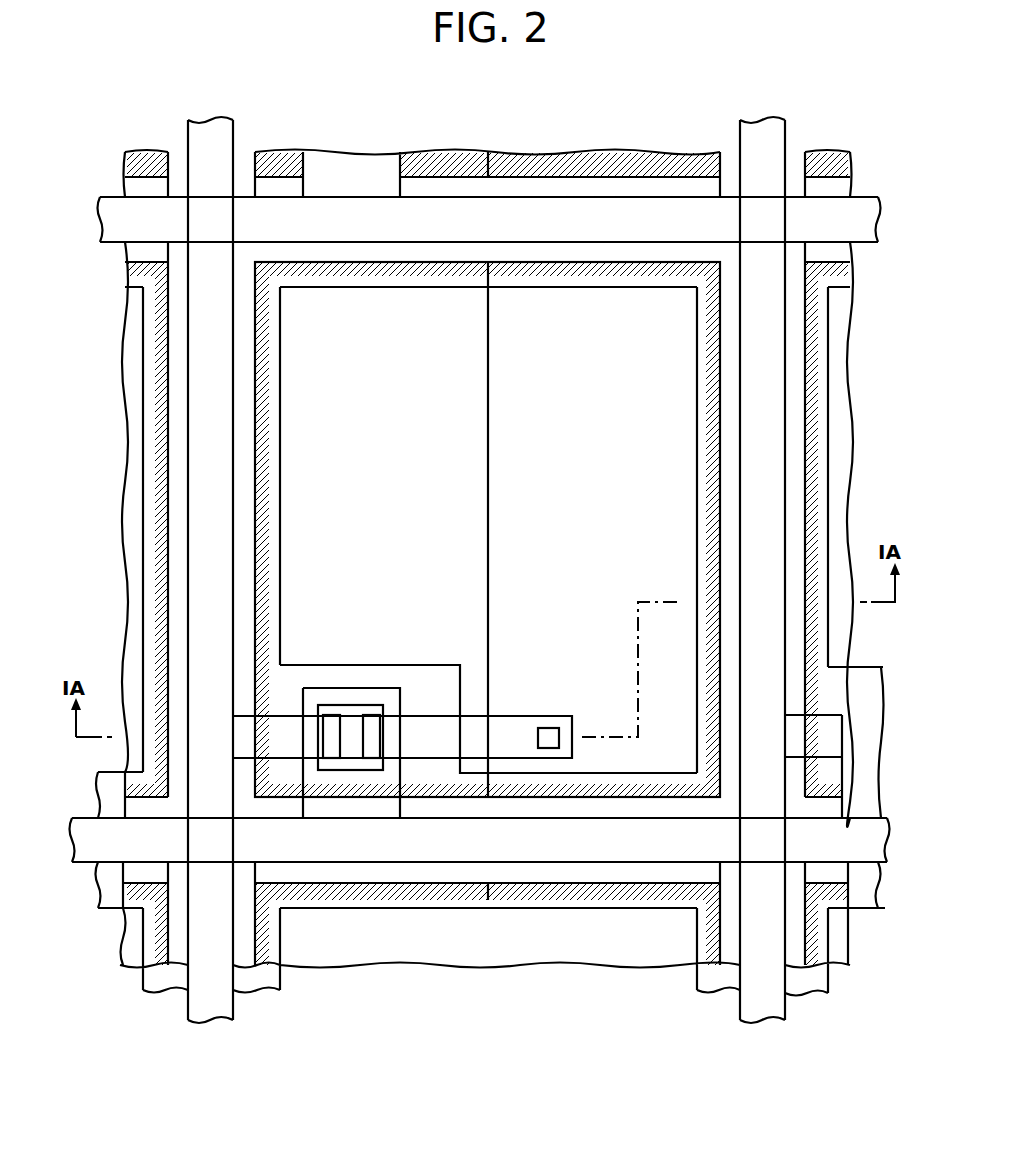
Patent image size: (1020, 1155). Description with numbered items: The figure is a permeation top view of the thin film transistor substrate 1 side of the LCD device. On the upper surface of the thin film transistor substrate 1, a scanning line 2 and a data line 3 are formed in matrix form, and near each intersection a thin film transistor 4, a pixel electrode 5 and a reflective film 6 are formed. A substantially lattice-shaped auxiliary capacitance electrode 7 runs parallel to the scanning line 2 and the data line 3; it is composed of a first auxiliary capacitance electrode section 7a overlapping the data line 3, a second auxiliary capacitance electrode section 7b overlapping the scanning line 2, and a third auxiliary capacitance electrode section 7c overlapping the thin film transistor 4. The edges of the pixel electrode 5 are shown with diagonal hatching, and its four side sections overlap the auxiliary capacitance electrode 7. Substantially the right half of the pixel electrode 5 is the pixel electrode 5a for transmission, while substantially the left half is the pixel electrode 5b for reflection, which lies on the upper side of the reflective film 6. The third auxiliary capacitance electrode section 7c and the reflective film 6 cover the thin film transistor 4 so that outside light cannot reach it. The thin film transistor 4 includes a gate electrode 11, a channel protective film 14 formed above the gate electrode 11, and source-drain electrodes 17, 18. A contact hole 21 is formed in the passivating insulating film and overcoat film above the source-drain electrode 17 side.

The thin film transistor substrate 1 is at (692, 152).
The scanning line 2 is at (862, 243).
The data line 3 is at (214, 134).
The thin film transistor 4 is at (334, 832).
The pixel electrode 5 is at (487, 433).
The pixel electrode for transmission 5a is at (536, 262).
The pixel electrode for reflection 5b is at (358, 262).
The reflective film 6 is at (470, 388).
The auxiliary capacitance electrode 7 is at (265, 984).
The first auxiliary capacitance electrode section 7a is at (270, 439).
The second auxiliary capacitance electrode section 7b is at (411, 277).
The third auxiliary capacitance electrode section 7c is at (437, 682).
The gate electrode 11 is at (386, 697).
The channel protective film 14 is at (349, 720).
The source-drain electrode 17 is at (510, 722).
The source-drain electrode 18 is at (285, 730).
The contact hole 21 is at (549, 732).